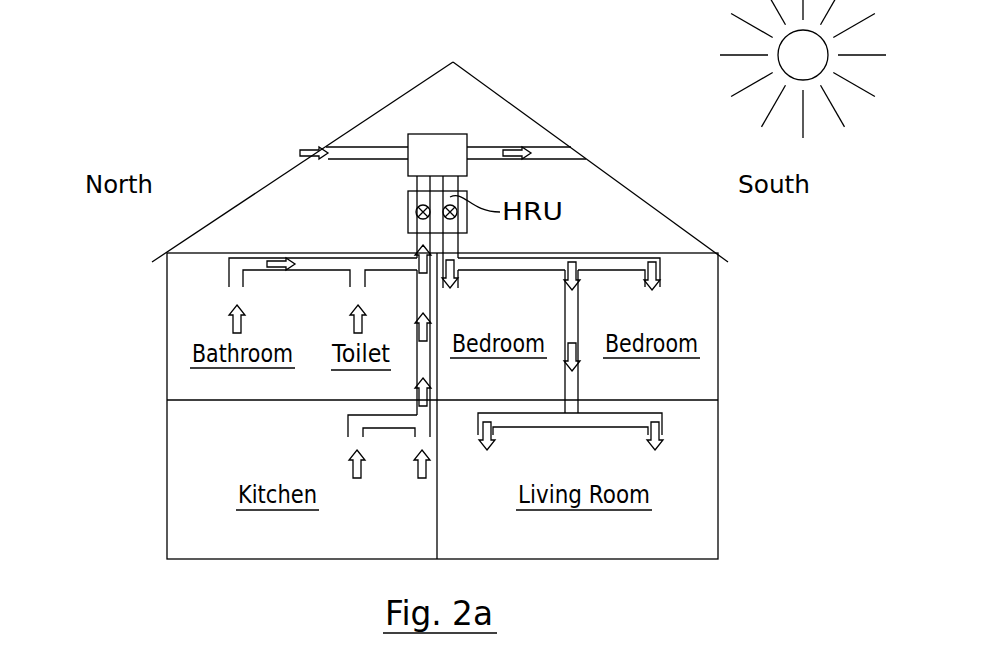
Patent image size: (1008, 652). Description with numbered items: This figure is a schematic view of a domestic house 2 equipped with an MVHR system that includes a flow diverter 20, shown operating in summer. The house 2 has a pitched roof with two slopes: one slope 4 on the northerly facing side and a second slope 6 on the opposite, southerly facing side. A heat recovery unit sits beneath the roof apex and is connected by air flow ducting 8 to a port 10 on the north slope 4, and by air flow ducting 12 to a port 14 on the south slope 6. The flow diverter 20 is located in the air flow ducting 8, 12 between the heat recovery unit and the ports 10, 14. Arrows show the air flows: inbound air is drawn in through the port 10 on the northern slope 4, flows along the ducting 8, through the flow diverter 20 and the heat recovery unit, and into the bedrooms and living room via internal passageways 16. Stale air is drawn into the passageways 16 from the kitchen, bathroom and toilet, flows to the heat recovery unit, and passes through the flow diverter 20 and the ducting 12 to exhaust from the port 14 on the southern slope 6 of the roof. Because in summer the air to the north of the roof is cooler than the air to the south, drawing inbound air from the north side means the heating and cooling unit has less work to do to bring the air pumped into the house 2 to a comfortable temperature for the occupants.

The house 2 is at (150, 325).
The slope 4 is at (220, 215).
The second slope 6 is at (660, 210).
The air flow ducting 8 is at (368, 155).
The port 10 is at (323, 147).
The air flow ducting 12 is at (487, 153).
The port 14 is at (580, 148).
The internal passageways 16 is at (583, 421).
The flow diverter 20 is at (437, 138).